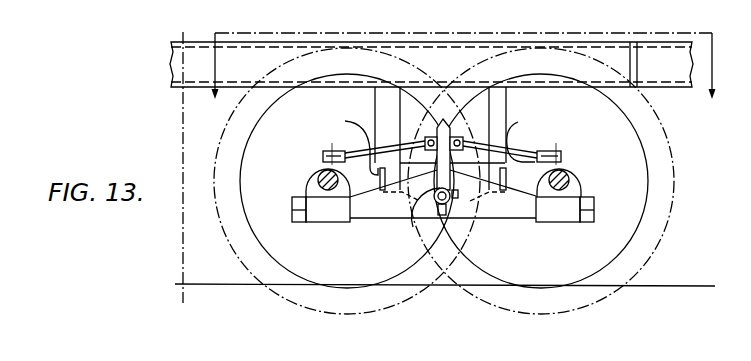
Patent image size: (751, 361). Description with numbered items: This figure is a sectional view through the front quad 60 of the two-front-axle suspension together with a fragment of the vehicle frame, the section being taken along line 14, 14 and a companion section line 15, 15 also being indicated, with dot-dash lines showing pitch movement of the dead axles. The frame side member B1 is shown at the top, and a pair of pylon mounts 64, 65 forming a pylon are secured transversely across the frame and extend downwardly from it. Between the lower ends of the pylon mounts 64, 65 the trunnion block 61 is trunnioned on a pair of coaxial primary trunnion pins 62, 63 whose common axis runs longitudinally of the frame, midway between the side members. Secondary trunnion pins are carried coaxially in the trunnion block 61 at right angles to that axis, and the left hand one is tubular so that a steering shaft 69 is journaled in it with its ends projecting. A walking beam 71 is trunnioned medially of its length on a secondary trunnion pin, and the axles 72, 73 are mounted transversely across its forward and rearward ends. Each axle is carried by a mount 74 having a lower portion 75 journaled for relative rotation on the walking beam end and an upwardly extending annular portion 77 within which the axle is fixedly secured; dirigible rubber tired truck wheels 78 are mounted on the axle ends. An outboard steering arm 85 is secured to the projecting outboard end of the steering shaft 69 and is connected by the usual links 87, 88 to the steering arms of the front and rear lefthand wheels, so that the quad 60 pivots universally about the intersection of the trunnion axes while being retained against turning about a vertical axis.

The frame side member B1 is at (175, 62).
The section line 14 is at (467, 79).
The section line 15 is at (177, 32).
The front quad 60 is at (610, 204).
The trunnion block 61 is at (466, 196).
The primary trunnion pin 62 is at (345, 121).
The primary trunnion pin 63 is at (527, 136).
The pylon mount 64 is at (382, 100).
The pylon mount 65 is at (510, 100).
The steering shaft 69 is at (413, 227).
The walking beam 71 is at (378, 218).
The axle 72 is at (318, 177).
The axle 73 is at (570, 180).
The mount 74 is at (309, 229).
The lower portion 75 is at (323, 222).
The annular portion 77 is at (313, 170).
The truck wheel 78 is at (490, 270).
The outboard steering arm 85 is at (443, 127).
The link 87 is at (327, 139).
The link 88 is at (547, 152).